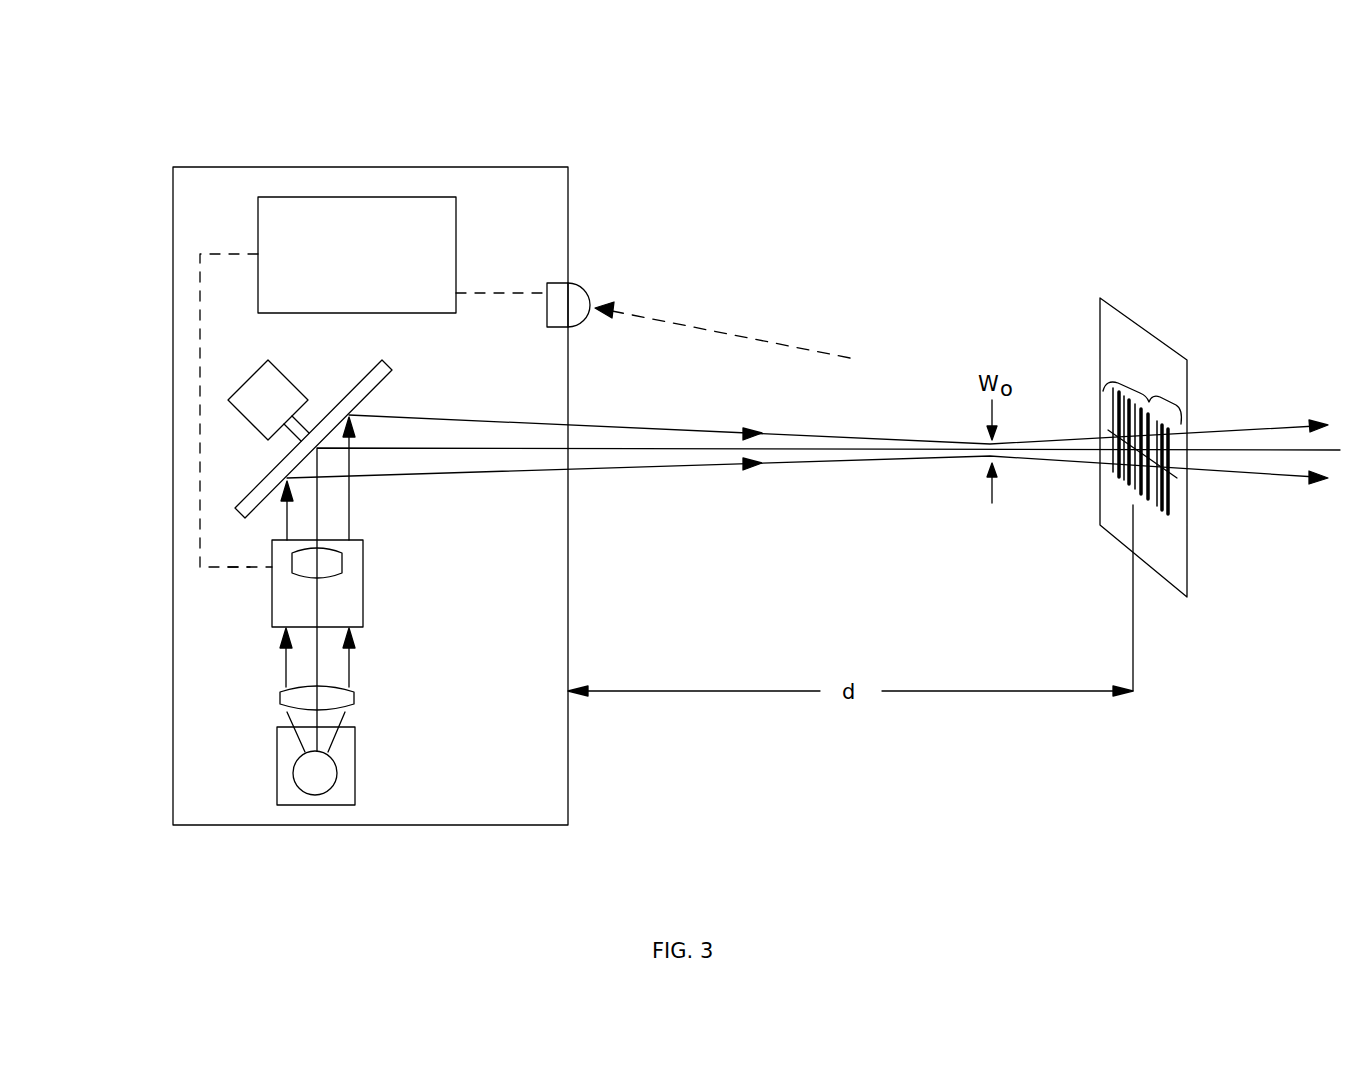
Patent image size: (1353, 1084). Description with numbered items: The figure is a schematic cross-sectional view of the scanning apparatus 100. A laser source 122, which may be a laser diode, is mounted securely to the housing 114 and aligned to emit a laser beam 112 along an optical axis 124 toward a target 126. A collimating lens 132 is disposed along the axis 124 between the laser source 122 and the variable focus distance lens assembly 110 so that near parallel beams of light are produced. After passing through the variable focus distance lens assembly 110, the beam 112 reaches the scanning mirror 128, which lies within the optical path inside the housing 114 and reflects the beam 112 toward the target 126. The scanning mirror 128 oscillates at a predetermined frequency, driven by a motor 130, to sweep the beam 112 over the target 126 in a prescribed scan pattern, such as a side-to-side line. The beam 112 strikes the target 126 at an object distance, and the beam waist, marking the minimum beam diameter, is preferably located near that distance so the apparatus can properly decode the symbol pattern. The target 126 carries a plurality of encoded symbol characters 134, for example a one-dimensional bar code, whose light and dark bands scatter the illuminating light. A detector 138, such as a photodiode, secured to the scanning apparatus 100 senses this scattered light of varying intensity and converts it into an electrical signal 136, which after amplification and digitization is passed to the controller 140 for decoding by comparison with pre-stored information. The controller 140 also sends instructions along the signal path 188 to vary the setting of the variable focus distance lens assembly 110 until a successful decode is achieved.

The scanning apparatus 100 is at (164, 77).
The housing 114 is at (173, 583).
The controller 140 is at (328, 382).
The electrical signal 136 is at (493, 293).
The detector 138 is at (580, 283).
The scanning mirror 128 is at (384, 366).
The motor 130 is at (268, 400).
The variable focus distance lens assembly 110 is at (363, 587).
The signal path 188 is at (240, 570).
The collimating lens 132 is at (354, 697).
The laser source 122 is at (355, 778).
The optical axis 124 is at (320, 670).
The laser beam 112 is at (790, 460).
The target 126 is at (1147, 328).
The encoded symbol characters 134 is at (1142, 440).